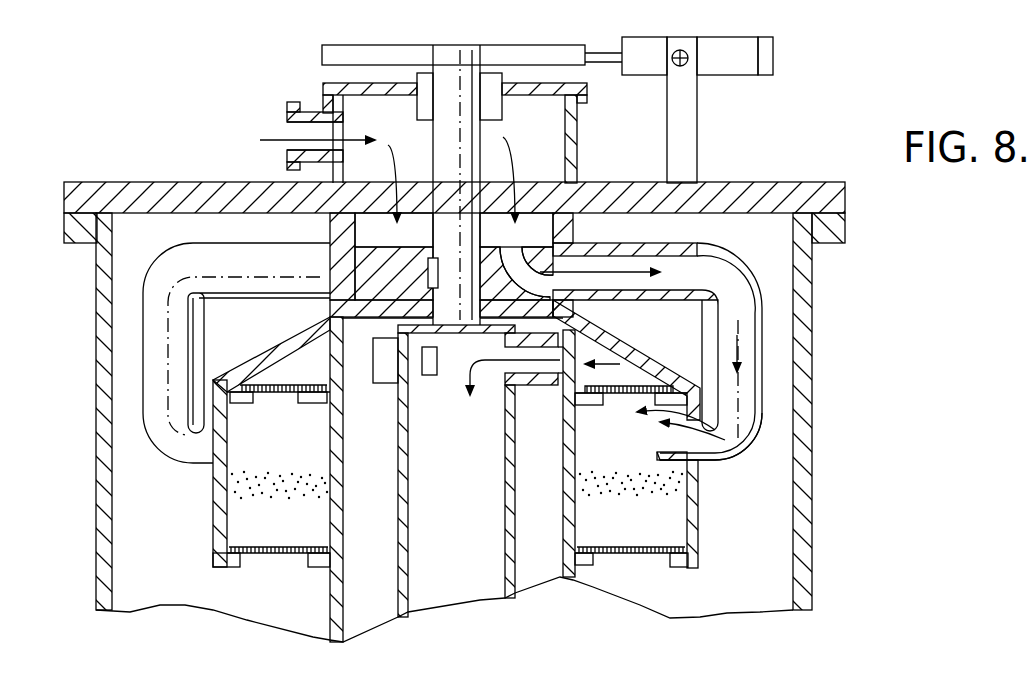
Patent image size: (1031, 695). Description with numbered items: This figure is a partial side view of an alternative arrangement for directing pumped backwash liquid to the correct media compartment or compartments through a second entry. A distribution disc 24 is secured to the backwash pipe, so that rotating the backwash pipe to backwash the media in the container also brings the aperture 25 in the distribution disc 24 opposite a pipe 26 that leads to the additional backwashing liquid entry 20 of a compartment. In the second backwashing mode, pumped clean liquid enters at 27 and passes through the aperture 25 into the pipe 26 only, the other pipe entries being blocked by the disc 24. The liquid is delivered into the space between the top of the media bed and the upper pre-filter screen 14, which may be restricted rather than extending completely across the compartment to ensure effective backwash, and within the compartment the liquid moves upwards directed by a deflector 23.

The upper pre-filter membrane or screen 14 is at (278, 395).
The additional backwashing liquid entry 20 is at (703, 443).
The deflector 23 is at (677, 473).
The distribution disc 24 is at (357, 272).
The aperture 25 is at (548, 250).
The pipe 26 is at (762, 355).
The clean liquid entry 27 is at (290, 110).